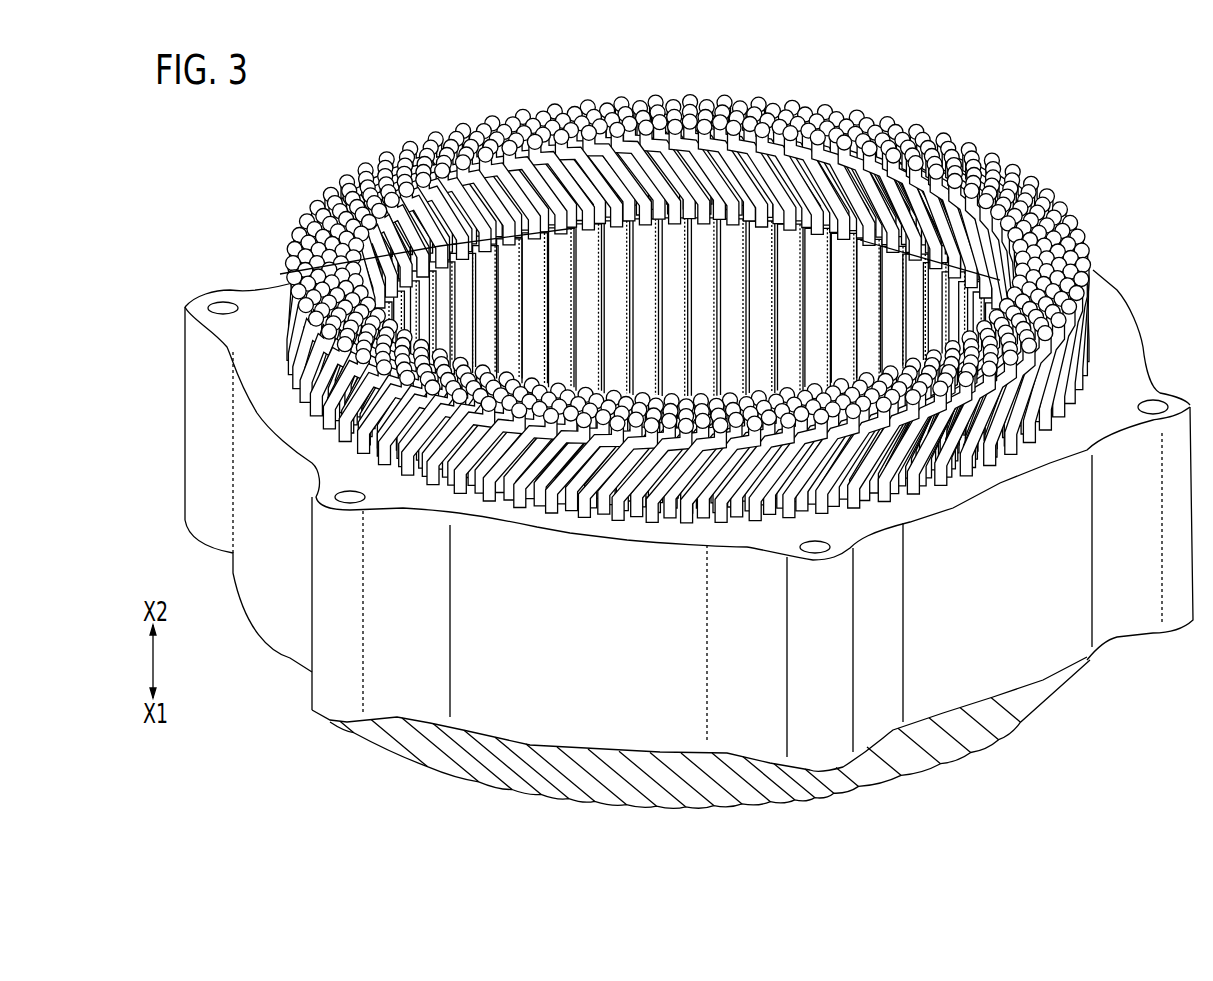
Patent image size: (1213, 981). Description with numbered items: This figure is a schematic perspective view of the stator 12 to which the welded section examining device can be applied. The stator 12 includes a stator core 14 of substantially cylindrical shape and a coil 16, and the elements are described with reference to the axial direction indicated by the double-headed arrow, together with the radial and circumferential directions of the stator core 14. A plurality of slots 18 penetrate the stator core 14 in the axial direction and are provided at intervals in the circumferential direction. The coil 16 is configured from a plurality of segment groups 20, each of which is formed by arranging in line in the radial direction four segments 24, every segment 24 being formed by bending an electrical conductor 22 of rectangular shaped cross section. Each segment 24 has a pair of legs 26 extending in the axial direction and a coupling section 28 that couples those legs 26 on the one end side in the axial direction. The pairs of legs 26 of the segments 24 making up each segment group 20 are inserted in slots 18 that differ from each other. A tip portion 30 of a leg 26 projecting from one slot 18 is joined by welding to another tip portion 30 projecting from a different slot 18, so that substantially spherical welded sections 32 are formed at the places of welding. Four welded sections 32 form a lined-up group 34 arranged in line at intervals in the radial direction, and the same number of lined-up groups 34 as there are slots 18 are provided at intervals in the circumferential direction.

The stator 12 is at (1078, 86).
The stator core 14 is at (1140, 332).
The coil 16 is at (922, 110).
The slot 18 is at (600, 280).
The segment group 20 is at (655, 527).
The electrical conductor 22 is at (638, 129).
The segment 24 is at (627, 165).
The leg 26 is at (553, 482).
The coupling section 28 is at (460, 773).
The tip portion 30 is at (707, 123).
The welded section 32 is at (692, 98).
The lined-up group 34 is at (730, 95).